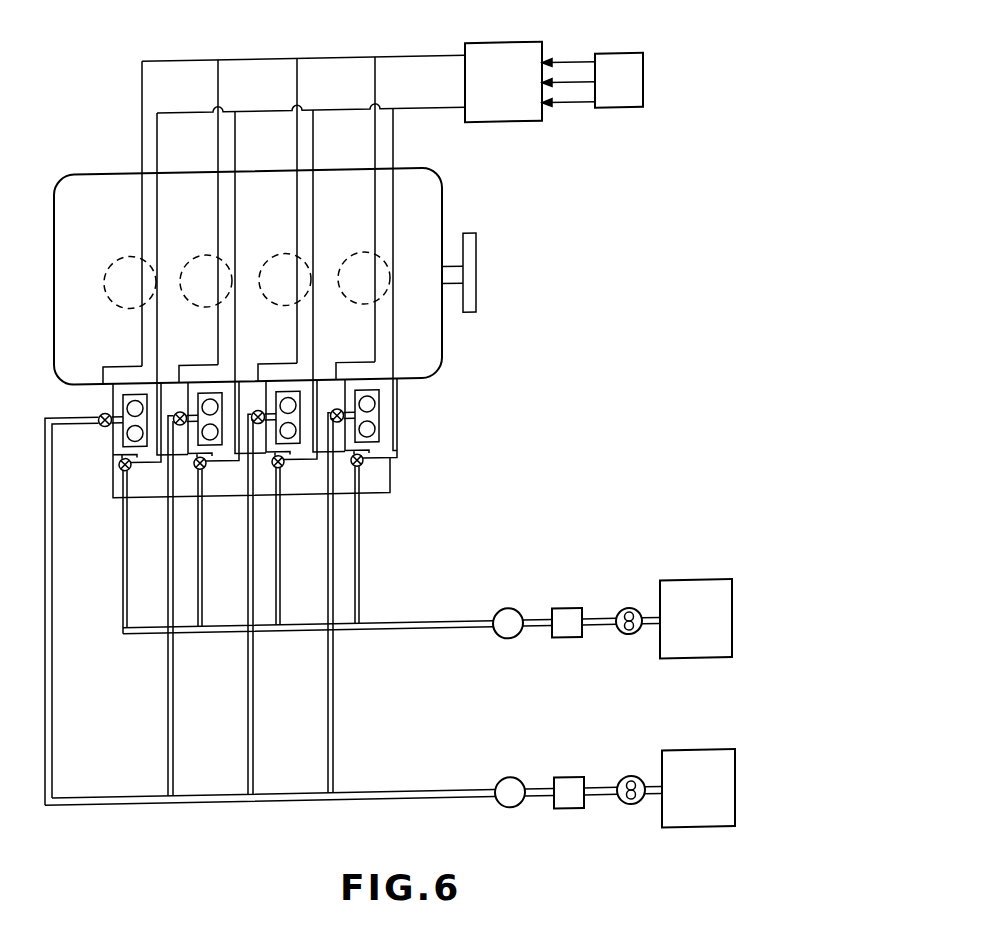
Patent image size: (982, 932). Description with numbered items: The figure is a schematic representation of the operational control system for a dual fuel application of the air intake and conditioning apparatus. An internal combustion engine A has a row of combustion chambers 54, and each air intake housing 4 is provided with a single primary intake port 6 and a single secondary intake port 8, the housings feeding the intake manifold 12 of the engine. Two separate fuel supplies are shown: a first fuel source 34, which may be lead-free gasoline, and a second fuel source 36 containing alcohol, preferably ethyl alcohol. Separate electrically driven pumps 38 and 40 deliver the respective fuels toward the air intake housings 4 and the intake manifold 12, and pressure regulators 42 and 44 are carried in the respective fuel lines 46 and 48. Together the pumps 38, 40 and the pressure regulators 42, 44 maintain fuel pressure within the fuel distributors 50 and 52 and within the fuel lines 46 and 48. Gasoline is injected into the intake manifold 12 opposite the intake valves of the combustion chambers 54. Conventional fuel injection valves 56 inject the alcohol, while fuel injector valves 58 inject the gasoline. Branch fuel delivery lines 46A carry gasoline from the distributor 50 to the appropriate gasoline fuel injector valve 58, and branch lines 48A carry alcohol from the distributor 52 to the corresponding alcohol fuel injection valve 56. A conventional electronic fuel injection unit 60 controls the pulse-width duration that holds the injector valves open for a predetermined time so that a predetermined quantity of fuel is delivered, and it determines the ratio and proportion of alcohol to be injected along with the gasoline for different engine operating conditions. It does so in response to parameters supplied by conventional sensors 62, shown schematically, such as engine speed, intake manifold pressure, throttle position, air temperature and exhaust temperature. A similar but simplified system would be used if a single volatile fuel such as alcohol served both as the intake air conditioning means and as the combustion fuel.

The internal combustion engine A is at (442, 348).
The air intake housing 4 is at (140, 371).
The primary intake port 6 is at (378, 437).
The secondary intake port 8 is at (375, 410).
The intake manifold 12 is at (383, 487).
The first fuel source 34 is at (695, 593).
The second fuel source 36 is at (706, 763).
The pump 38 is at (630, 620).
The pump 40 is at (631, 788).
The pressure regulator 42 is at (568, 649).
The pressure regulator 44 is at (566, 788).
The fuel line 46 is at (388, 643).
The branch fuel delivery line 46A is at (361, 567).
The fuel line 48 is at (302, 811).
The branch line 48A is at (168, 715).
The fuel distributor 50 is at (501, 648).
The fuel distributor 52 is at (511, 787).
The combustion chamber 54 is at (117, 305).
The fuel injection valve 56 is at (99, 419).
The fuel injector valve 58 is at (119, 471).
The electronic fuel injection unit 60 is at (502, 52).
The sensors 62 is at (620, 119).